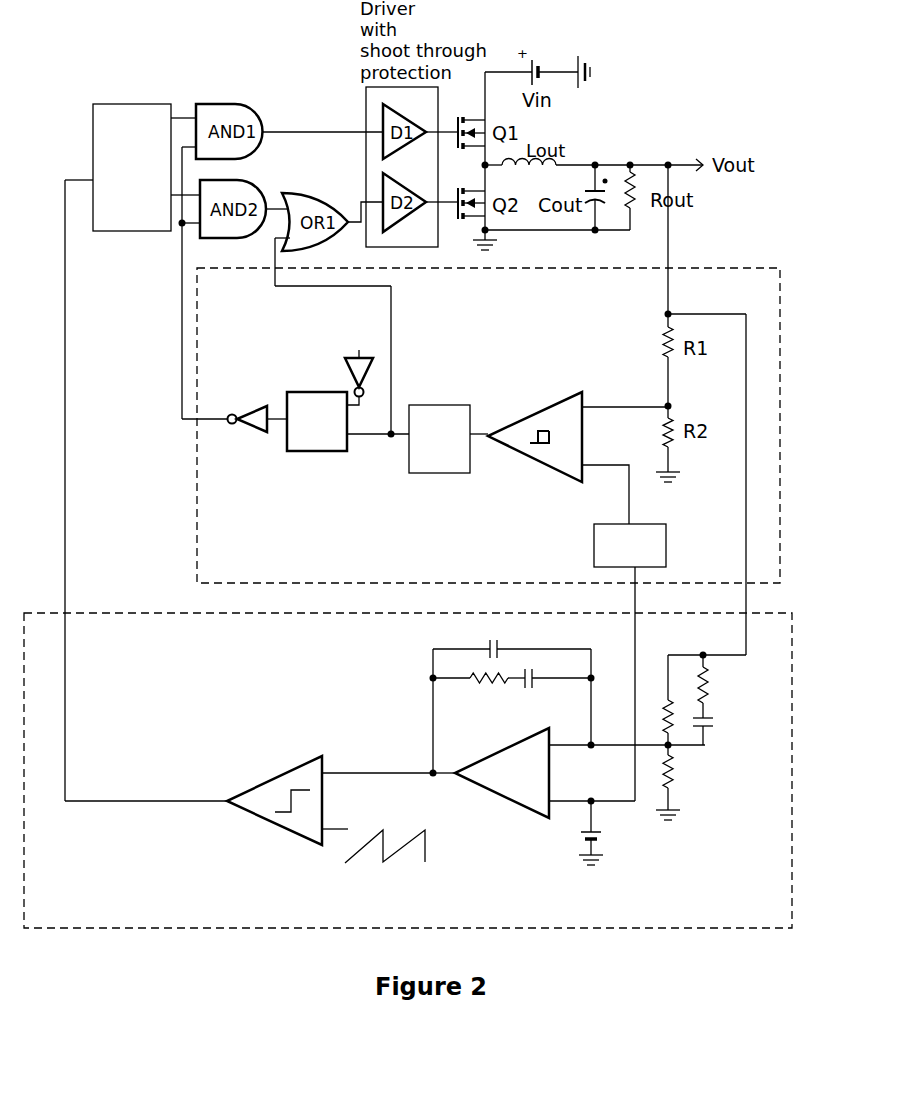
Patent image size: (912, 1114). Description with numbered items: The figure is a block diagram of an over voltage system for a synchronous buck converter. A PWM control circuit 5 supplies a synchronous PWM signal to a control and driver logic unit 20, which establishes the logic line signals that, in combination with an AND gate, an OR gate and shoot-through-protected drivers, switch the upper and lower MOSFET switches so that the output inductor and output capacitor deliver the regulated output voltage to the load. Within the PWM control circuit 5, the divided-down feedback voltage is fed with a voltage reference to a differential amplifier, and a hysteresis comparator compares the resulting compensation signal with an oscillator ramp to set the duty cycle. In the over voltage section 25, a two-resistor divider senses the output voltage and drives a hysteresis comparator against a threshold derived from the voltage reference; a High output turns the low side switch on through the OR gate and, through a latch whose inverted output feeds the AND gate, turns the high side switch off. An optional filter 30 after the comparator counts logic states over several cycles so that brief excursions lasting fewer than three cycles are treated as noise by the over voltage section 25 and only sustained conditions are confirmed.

The PWM control circuit 5 is at (58, 910).
The control and driver logic unit 20 is at (132, 167).
The over voltage section 25 is at (481, 425).
The filter 30 is at (445, 453).